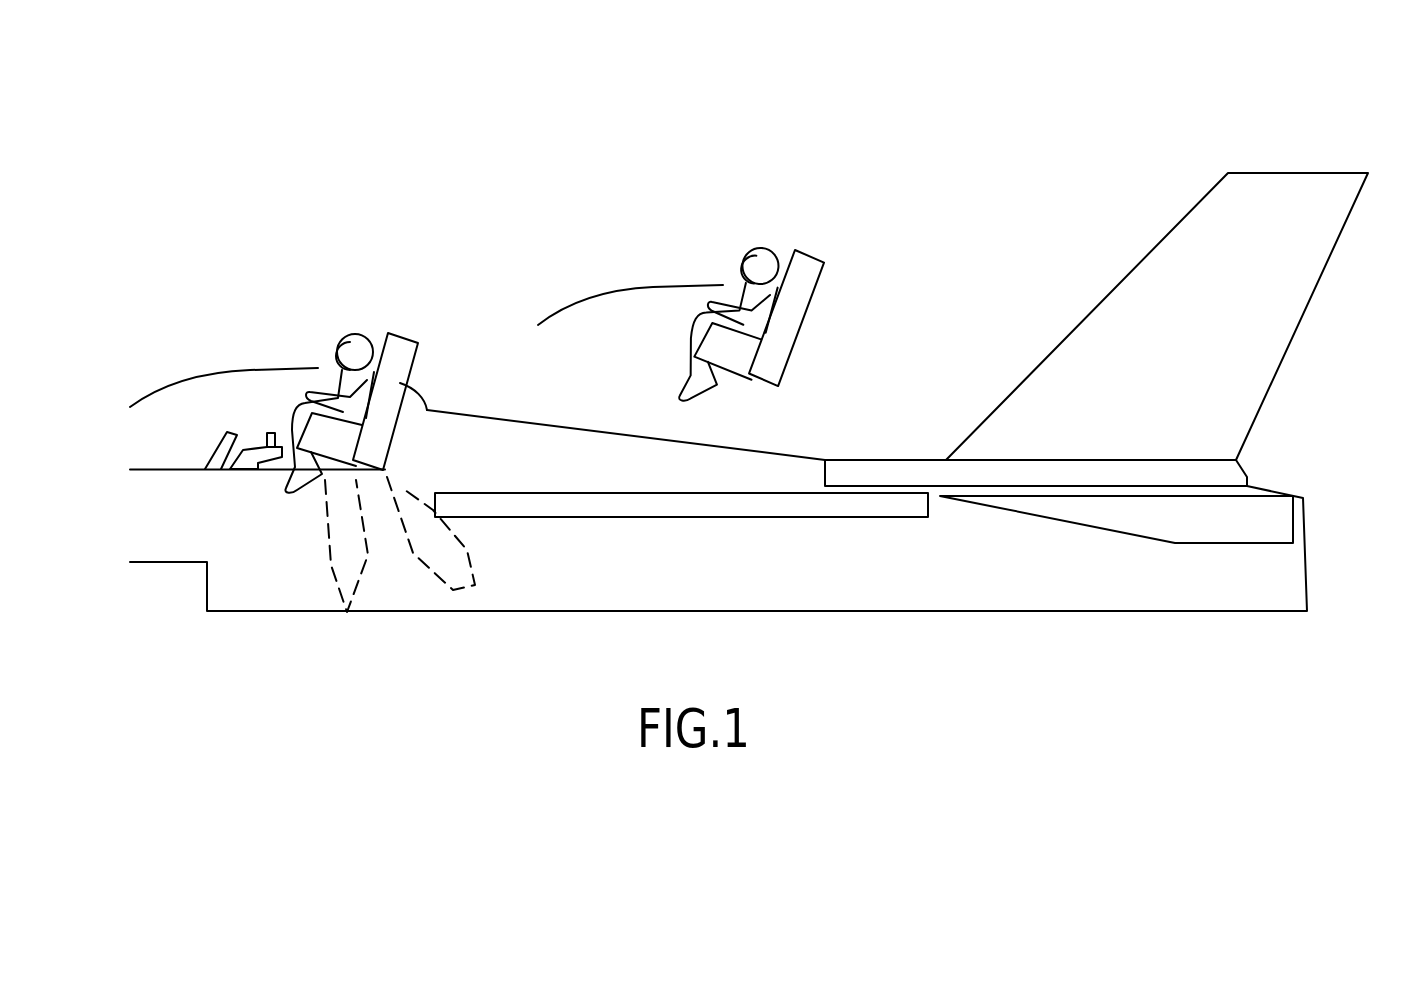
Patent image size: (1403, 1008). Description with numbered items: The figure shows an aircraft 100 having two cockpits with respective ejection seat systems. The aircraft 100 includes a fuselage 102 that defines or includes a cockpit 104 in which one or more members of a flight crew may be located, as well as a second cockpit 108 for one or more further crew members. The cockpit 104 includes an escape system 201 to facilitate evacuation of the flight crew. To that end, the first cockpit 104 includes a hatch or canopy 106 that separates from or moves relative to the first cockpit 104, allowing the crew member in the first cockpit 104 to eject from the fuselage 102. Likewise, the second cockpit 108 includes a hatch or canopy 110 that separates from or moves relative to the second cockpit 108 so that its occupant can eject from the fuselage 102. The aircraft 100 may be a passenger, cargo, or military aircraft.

The aircraft 100 is at (917, 220).
The fuselage 102 is at (852, 456).
The cockpit 104 is at (363, 388).
The hatch or canopy 106 is at (248, 368).
The second cockpit 108 is at (792, 220).
The hatch or canopy 110 is at (652, 287).
The escape system 201 is at (328, 305).